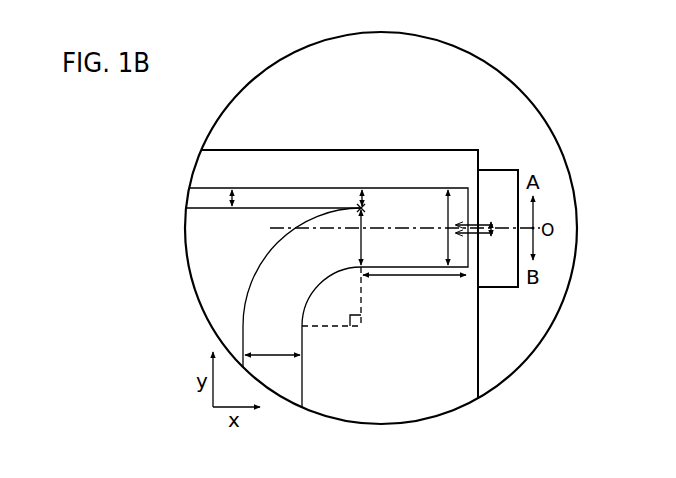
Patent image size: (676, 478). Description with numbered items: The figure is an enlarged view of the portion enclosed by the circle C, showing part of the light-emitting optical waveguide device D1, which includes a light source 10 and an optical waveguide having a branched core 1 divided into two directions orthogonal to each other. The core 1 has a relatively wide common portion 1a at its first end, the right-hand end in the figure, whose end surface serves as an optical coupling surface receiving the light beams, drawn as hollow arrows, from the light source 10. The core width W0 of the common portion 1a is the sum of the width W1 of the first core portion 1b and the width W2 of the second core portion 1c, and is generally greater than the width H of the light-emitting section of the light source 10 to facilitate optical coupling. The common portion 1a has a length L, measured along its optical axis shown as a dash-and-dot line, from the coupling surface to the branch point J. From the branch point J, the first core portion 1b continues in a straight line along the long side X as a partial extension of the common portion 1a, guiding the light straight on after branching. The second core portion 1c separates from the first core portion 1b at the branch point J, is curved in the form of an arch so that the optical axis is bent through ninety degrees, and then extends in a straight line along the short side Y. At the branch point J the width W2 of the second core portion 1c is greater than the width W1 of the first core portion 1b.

The branched core 1 is at (280, 218).
The common portion 1a is at (418, 212).
The first core portion 1b is at (312, 200).
The second core portion 1c is at (290, 277).
The light source 10 is at (505, 170).
The circle C is at (232, 98).
The optical waveguide device D1 is at (437, 184).
The branch point J is at (360, 204).
The long side X is at (278, 150).
The short side Y is at (478, 343).
The width of light-emitting section H is at (482, 236).
The length of common portion L is at (414, 288).
The core width of common portion W0 is at (432, 227).
The core width of first core portion W1 is at (314, 199).
The core width of second core portion W2 is at (321, 282).